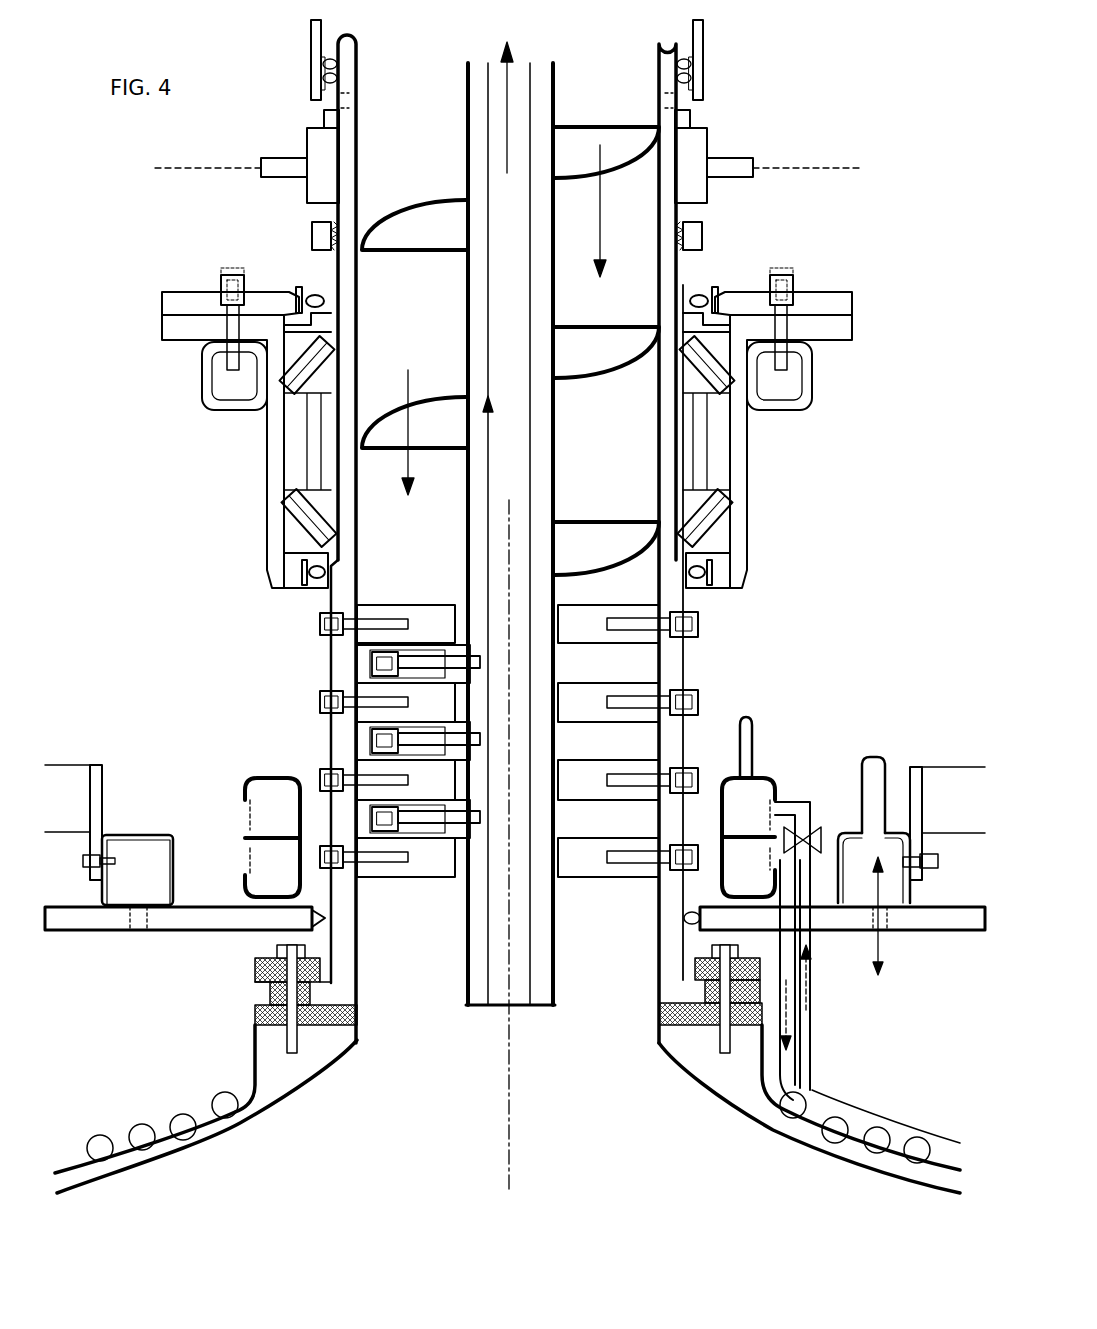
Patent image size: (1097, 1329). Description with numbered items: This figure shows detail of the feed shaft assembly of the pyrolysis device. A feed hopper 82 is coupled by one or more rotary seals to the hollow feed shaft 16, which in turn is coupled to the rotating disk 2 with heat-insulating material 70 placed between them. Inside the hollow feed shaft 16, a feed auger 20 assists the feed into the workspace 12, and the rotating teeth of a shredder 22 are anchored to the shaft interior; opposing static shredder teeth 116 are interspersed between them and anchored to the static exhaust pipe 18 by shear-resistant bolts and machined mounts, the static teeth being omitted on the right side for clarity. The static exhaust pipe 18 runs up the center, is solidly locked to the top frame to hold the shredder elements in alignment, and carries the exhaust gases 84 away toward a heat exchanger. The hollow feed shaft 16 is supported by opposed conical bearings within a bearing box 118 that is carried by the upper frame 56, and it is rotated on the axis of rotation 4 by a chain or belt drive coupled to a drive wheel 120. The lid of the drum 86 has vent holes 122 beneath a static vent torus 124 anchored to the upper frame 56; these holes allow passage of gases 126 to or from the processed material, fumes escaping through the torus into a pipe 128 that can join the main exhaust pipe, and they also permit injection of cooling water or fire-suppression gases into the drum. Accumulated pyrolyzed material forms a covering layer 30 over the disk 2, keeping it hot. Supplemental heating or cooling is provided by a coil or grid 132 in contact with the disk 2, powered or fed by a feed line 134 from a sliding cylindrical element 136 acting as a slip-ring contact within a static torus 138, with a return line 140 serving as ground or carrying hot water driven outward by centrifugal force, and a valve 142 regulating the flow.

The rotating disk 2 is at (175, 1157).
The axis of rotation 4 is at (520, 1095).
The workspace 12 is at (345, 1198).
The hollow feed shaft 16 is at (340, 666).
The static exhaust pipe 18 is at (545, 470).
The feed auger 20 is at (432, 242).
The shredder 22 is at (655, 690).
The covering layer 30 is at (292, 540).
The upper frame 56 is at (815, 356).
The heat-insulating material 70 is at (255, 1013).
The feed hopper 82 is at (312, 45).
The exhaust gases 84 is at (507, 108).
The lid of the drum 86 is at (125, 918).
The static shredder teeth 116 is at (430, 650).
The bearing box 118 is at (758, 435).
The drive wheel 120 is at (308, 152).
The vent holes 122 is at (887, 918).
The static vent torus 124 is at (140, 838).
The gases 126 is at (870, 943).
The pipe 128 is at (875, 778).
The coil or grid 132 is at (837, 1123).
The feed line 134 is at (720, 1113).
The sliding cylindrical element 136 is at (775, 795).
The static torus 138 is at (760, 778).
The return line 140 is at (812, 1052).
The valve 142 is at (822, 832).